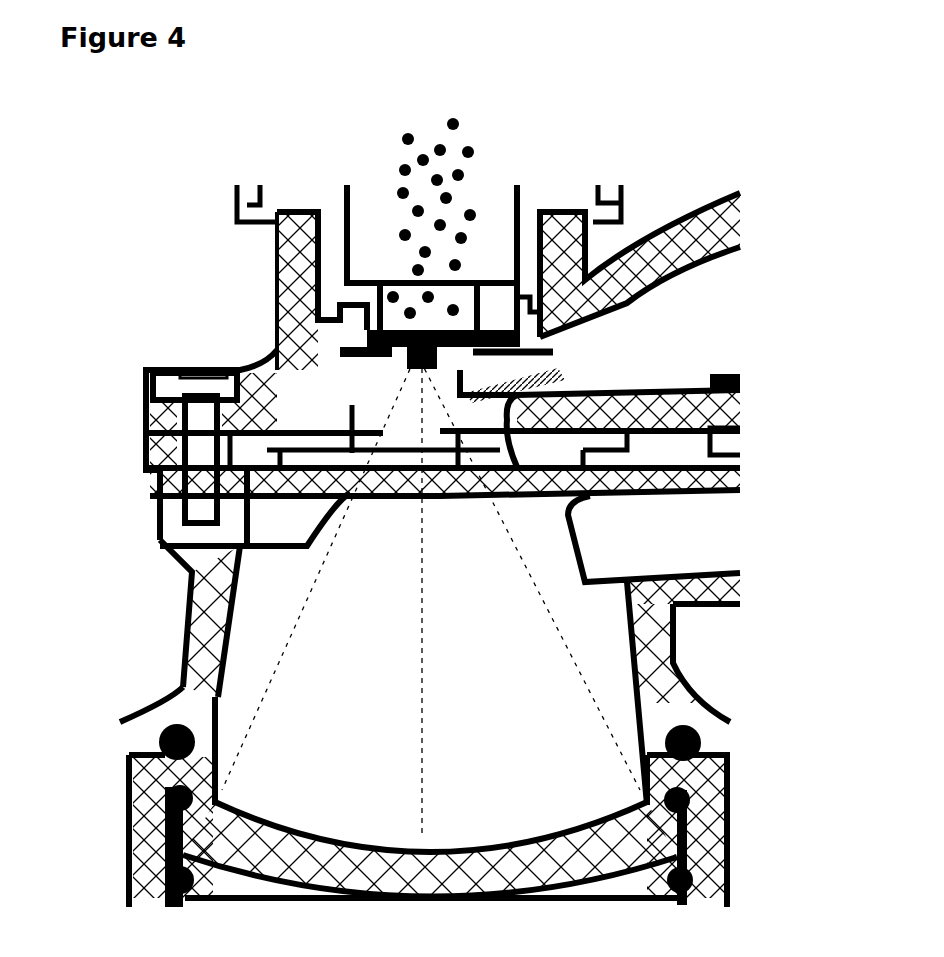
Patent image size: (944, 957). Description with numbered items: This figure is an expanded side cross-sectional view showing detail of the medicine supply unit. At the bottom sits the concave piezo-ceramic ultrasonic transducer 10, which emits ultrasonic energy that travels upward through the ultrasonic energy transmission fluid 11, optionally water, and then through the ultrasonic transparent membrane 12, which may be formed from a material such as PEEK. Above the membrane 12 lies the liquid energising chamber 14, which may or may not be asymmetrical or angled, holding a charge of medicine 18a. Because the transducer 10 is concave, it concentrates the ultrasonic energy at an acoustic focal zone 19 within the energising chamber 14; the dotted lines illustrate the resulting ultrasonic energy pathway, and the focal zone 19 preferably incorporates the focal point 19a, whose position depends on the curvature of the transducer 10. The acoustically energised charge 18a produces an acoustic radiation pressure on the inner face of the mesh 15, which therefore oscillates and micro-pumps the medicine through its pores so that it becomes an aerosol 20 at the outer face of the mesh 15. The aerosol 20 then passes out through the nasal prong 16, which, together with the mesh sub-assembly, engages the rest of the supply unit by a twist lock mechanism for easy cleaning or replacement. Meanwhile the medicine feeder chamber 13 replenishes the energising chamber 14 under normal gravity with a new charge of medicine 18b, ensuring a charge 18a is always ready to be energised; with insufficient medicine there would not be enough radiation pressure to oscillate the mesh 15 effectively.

The ultrasonic transducer 10 is at (230, 847).
The ultrasonic energy transmission fluid 11 is at (243, 695).
The ultrasonic transparent membrane 12 is at (240, 546).
The medicine feeder chamber 13 is at (636, 328).
The liquid energising chamber 14 is at (378, 386).
The mesh 15 is at (372, 347).
The nasal prong 16 is at (310, 193).
The charge of medicine 18a is at (383, 405).
The new charge of medicine 18b is at (583, 370).
The acoustic focal zone 19 is at (453, 433).
The focal point 19a is at (410, 380).
The aerosol 20 is at (432, 117).